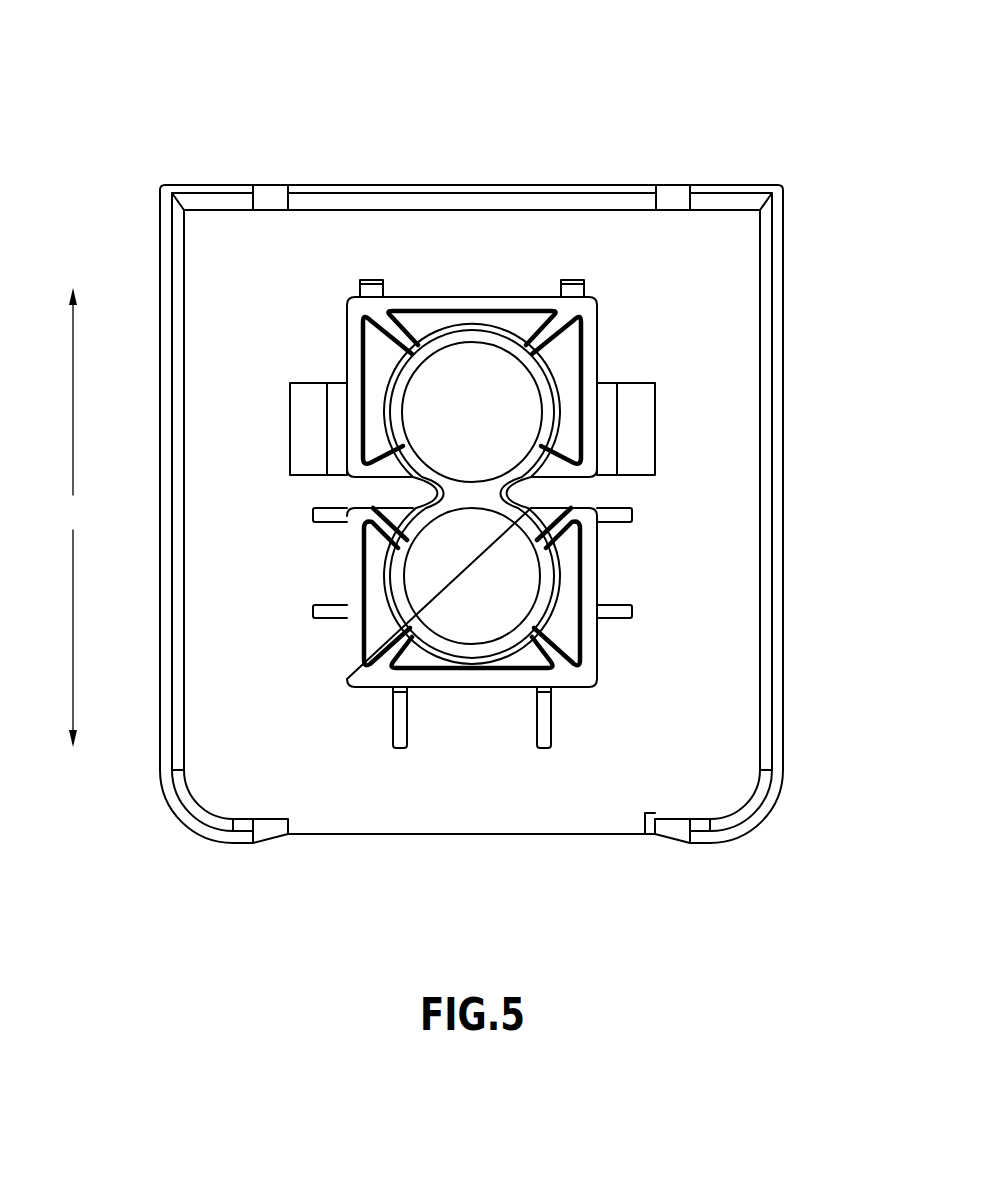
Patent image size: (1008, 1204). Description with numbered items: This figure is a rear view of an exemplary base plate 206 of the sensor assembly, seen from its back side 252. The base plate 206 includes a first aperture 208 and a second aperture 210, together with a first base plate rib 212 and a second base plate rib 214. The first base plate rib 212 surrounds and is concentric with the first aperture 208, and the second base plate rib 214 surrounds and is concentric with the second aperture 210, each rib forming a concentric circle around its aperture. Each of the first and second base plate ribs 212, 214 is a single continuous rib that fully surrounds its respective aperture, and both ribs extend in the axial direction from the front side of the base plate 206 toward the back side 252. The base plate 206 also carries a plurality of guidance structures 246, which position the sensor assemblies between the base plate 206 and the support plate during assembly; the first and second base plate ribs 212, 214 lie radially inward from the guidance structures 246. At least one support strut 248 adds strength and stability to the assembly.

The base plate 206 is at (183, 118).
The back side 252 is at (248, 287).
The first aperture 208 is at (505, 390).
The second aperture 210 is at (503, 577).
The first base plate rib 212 is at (548, 402).
The second base plate rib 214 is at (545, 590).
The guidance structures 246 is at (398, 343).
The support strut 248 is at (545, 727).